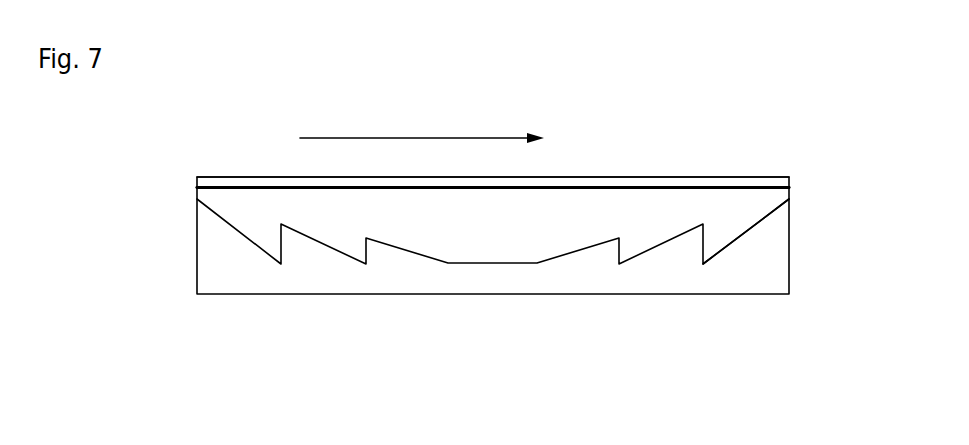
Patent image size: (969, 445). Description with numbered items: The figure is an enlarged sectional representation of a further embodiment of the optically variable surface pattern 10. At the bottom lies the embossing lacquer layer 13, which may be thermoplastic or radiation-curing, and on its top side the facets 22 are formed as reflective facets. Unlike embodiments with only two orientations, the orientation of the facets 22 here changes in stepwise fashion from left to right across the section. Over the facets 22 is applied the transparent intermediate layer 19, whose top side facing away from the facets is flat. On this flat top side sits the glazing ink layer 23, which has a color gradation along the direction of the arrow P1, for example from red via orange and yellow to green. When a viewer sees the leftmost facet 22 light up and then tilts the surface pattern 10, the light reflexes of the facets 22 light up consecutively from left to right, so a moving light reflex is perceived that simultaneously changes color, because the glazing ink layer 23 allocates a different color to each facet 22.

The optically variable surface pattern 10 is at (626, 175).
The embossing lacquer layer 13 is at (775, 280).
The transparent intermediate layer 19 is at (715, 206).
The facets 22 is at (258, 247).
The glazing ink layer 23 is at (670, 178).
The arrow P1 is at (367, 138).